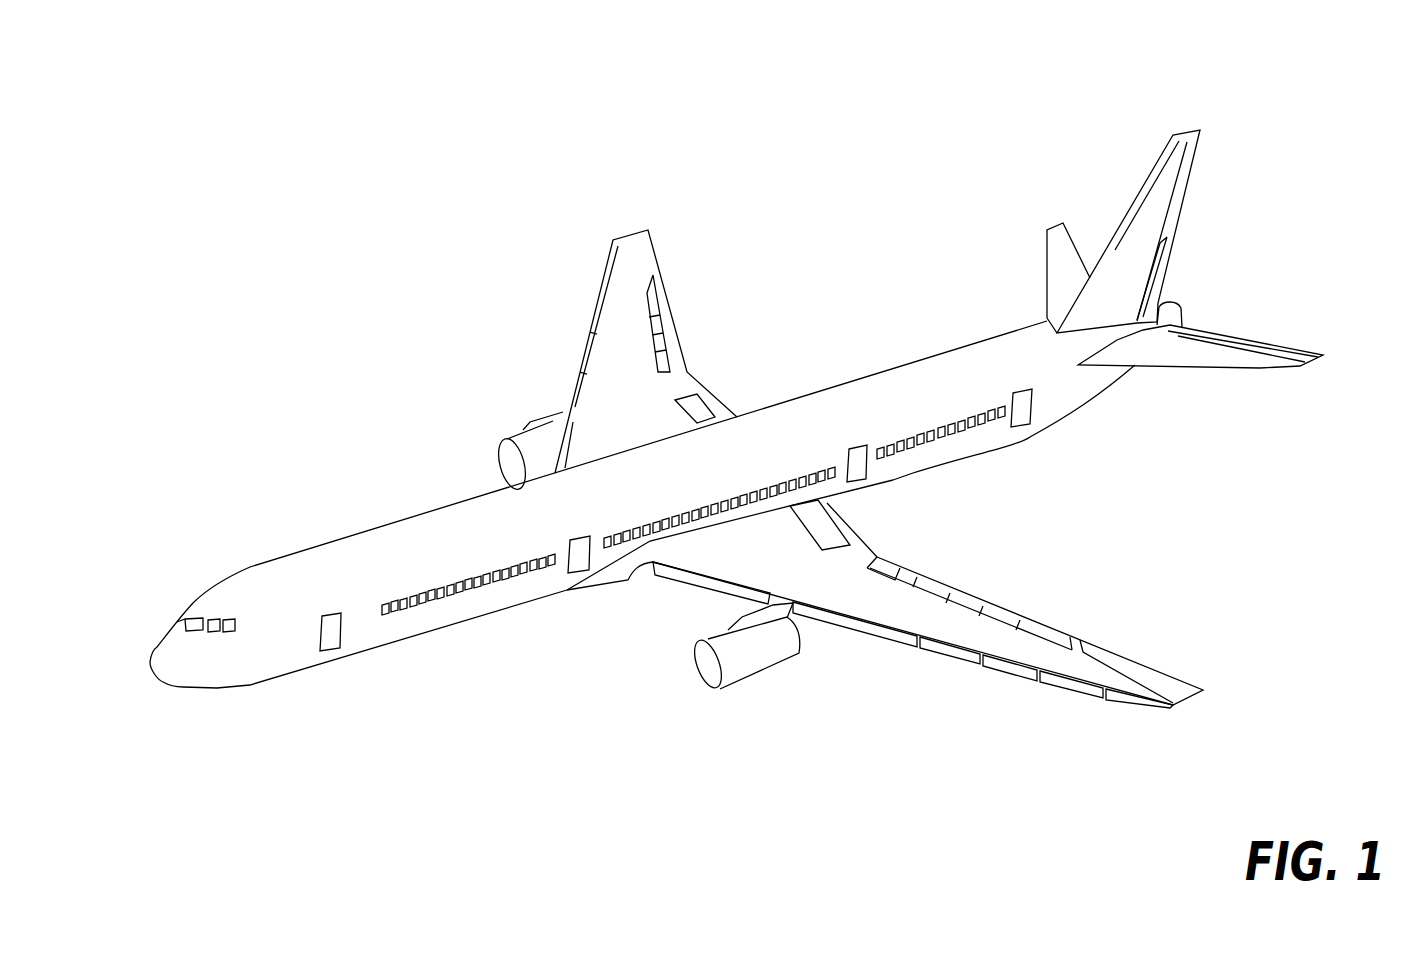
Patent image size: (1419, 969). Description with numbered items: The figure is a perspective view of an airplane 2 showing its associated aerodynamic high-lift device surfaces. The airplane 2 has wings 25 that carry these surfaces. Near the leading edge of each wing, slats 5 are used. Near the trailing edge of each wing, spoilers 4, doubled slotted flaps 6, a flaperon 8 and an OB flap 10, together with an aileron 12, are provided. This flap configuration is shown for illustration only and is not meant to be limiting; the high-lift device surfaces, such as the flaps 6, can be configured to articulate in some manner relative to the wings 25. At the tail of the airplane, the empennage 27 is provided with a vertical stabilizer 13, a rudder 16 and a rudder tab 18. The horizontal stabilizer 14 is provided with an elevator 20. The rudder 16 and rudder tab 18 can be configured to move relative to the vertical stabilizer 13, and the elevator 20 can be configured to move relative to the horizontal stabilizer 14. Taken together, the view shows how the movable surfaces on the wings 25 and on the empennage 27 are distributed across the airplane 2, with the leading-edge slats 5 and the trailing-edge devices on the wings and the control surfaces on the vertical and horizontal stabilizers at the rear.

The airplane 2 is at (243, 146).
The spoilers 4 is at (645, 320).
The slats 5 is at (562, 394).
The doubled slotted flaps 6 is at (857, 521).
The flaperon 8 is at (884, 548).
The OB flap 10 is at (1012, 600).
The aileron 12 is at (1139, 657).
The vertical stabilizer 13 is at (1128, 231).
The horizontal stabilizer 14 is at (1140, 365).
The rudder 16 is at (1189, 206).
The rudder tab 18 is at (1172, 272).
The elevator 20 is at (1207, 328).
The wings 25 is at (879, 467).
The empennage 27 is at (1028, 198).